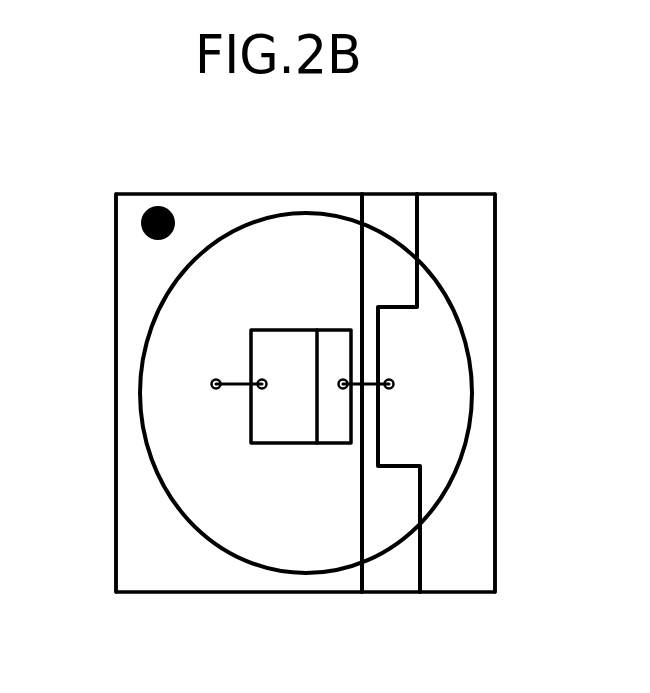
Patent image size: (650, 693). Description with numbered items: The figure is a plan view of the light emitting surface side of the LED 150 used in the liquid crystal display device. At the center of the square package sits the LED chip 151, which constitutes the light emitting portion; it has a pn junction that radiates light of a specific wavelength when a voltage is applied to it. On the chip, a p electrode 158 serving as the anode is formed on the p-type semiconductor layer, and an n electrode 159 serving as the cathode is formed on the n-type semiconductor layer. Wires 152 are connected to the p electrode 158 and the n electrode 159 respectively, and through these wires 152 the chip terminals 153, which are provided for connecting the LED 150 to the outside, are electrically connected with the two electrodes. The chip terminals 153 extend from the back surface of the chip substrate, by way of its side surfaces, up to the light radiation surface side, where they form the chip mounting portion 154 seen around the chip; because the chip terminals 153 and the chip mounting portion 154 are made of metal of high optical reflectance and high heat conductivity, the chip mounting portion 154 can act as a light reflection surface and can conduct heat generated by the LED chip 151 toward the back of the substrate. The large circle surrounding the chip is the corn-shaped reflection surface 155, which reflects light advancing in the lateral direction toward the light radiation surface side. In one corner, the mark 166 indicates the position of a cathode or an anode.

The LED 150 is at (310, 540).
The LED chip 151 is at (292, 333).
The wires 152 is at (210, 384).
The chip terminals 153 is at (158, 558).
The chip mounting portion 154 is at (210, 280).
The corn-shaped reflection surface 155 is at (170, 285).
The p electrode 158 is at (332, 350).
The n electrode 159 is at (270, 355).
The mark 166 is at (138, 217).